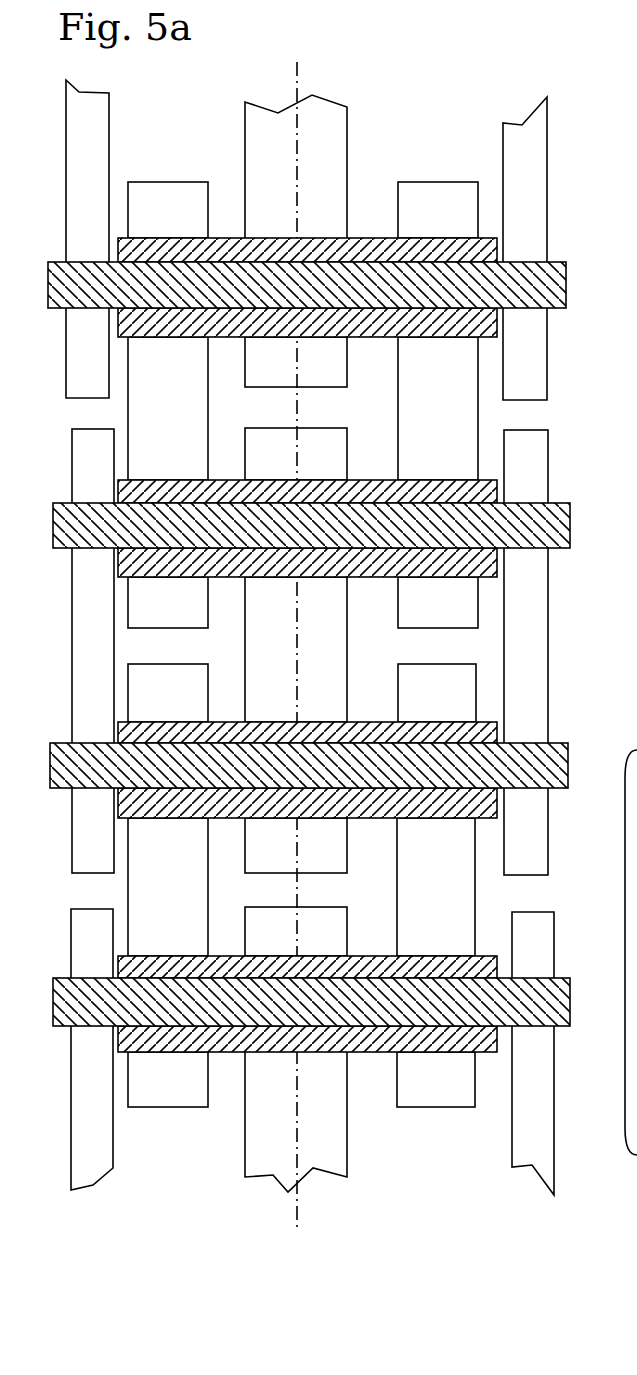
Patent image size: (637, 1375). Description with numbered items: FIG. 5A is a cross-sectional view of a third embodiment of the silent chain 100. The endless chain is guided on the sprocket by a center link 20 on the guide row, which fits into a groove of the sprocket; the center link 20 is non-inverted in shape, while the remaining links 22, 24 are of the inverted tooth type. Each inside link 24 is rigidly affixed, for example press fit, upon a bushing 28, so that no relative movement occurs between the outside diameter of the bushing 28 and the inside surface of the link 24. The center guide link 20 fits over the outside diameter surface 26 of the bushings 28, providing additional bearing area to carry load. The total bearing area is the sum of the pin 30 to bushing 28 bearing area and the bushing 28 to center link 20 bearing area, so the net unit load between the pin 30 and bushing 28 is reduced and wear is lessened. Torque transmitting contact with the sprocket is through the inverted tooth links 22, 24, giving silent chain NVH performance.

The stacked assembly 100 is at (292, 84).
The center link 20 is at (312, 164).
The link 22 is at (76, 376).
The inside link 24 is at (154, 221).
The outside diameter surface 26 is at (253, 478).
The bushing 28 is at (307, 645).
The pin 30 is at (543, 283).